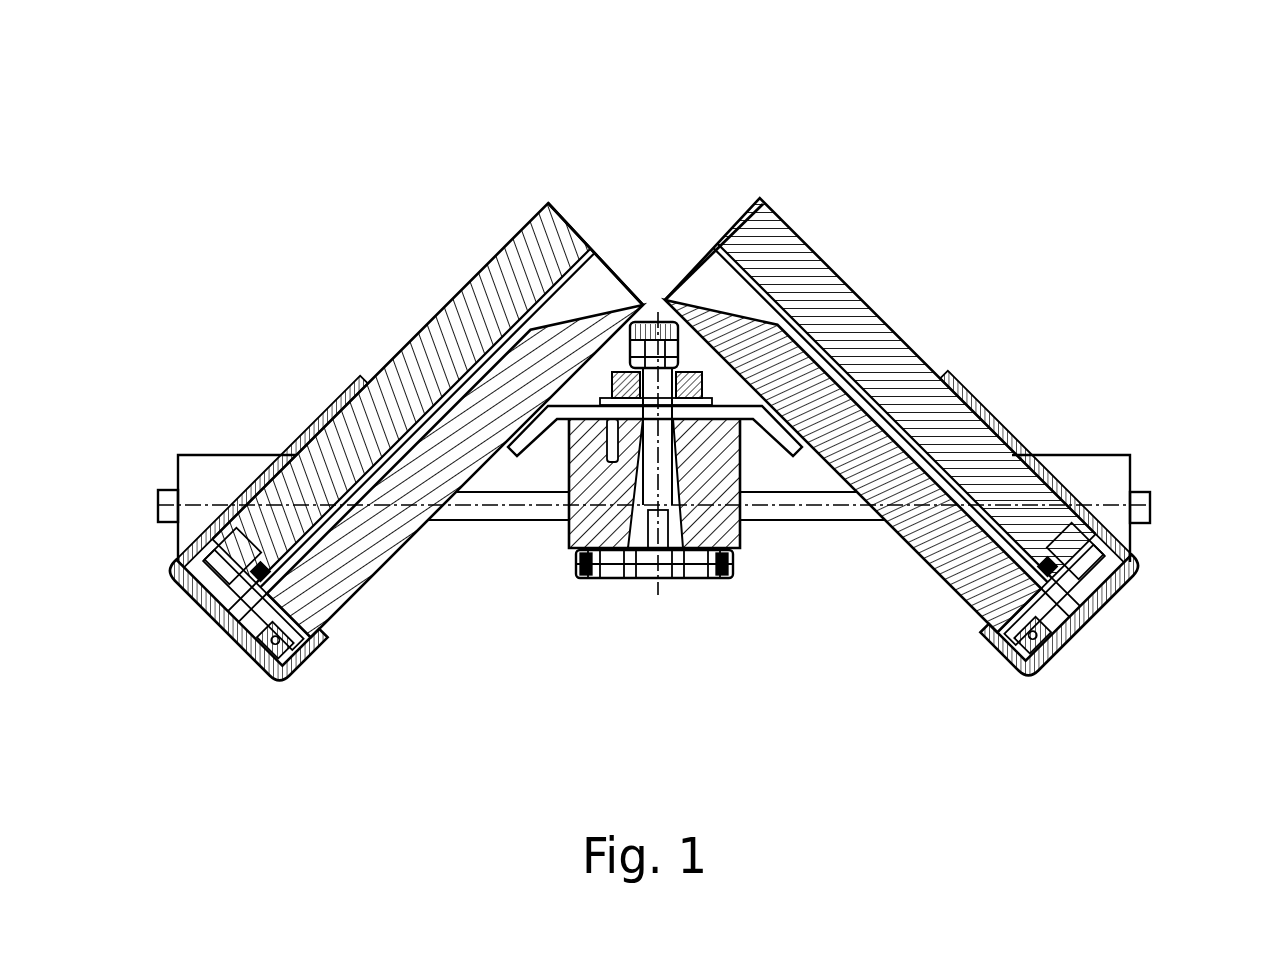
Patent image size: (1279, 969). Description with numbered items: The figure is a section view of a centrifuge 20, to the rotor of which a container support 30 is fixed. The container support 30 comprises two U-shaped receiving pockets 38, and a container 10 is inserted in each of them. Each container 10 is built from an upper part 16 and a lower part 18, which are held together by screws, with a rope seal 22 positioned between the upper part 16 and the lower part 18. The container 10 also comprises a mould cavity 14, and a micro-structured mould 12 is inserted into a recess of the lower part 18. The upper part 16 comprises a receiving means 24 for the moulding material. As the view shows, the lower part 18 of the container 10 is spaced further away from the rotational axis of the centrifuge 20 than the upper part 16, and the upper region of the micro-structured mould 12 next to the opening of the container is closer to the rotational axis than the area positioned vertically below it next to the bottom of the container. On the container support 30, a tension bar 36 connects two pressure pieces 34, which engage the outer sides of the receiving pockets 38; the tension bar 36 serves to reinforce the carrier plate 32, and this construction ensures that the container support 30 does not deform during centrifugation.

The container 10 is at (484, 216).
The micro-structured mould 12 is at (440, 375).
The mould cavity 14 is at (405, 365).
The upper part 16 is at (727, 337).
The lower part 18 is at (427, 388).
The centrifuge 20 is at (742, 607).
The rope seal 22 is at (240, 545).
The receiving means 24 is at (600, 282).
The container support 30 is at (996, 359).
The carrier plate 32 is at (545, 440).
The pressure pieces 34 is at (253, 473).
The tension bar 36 is at (458, 500).
The receiving pockets 38 is at (307, 654).